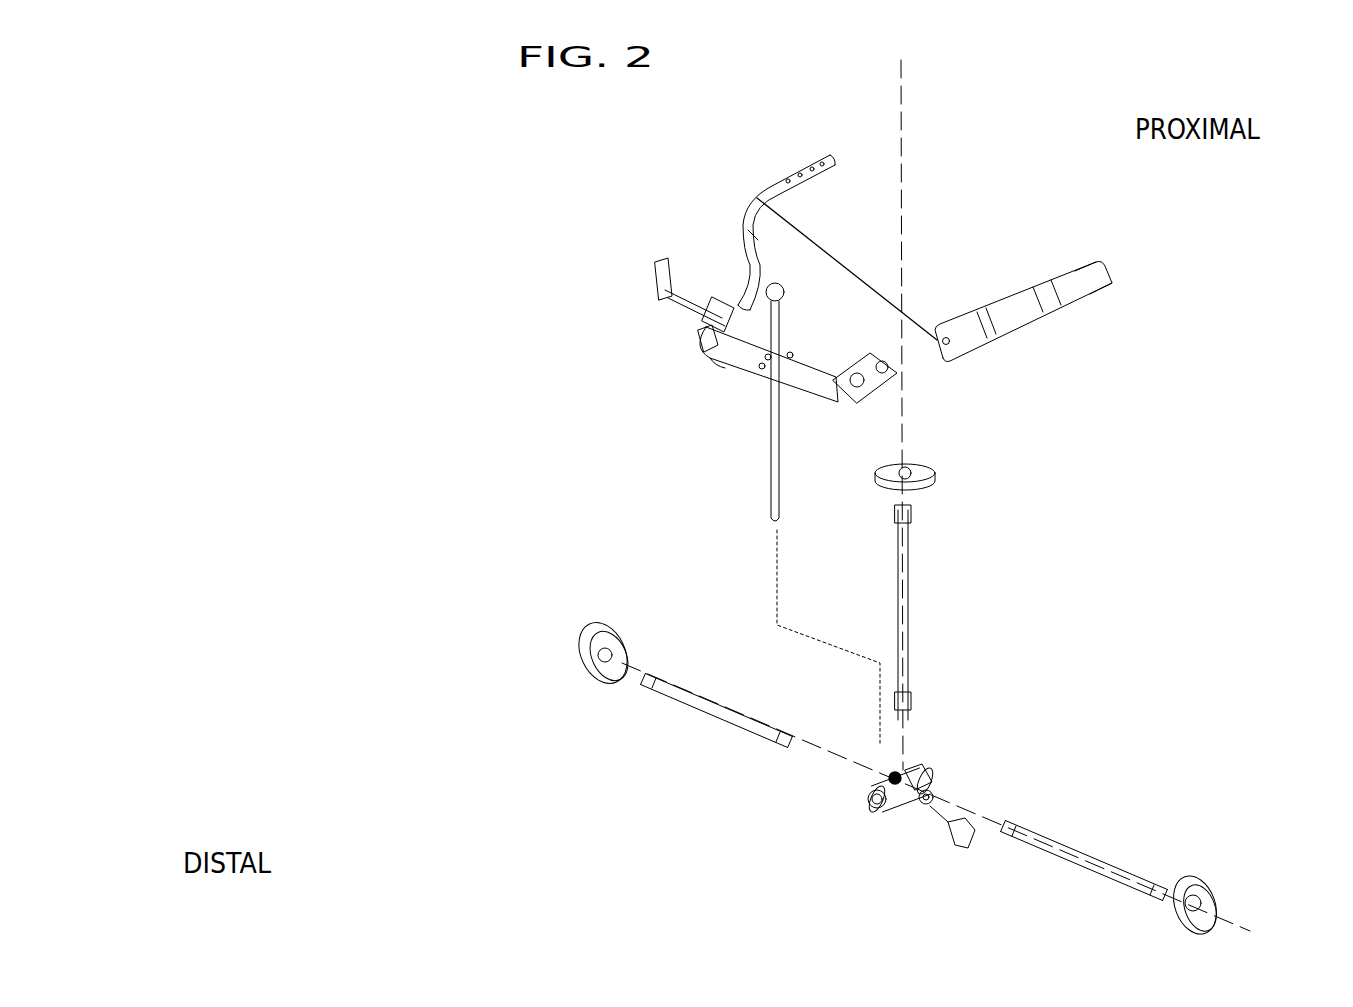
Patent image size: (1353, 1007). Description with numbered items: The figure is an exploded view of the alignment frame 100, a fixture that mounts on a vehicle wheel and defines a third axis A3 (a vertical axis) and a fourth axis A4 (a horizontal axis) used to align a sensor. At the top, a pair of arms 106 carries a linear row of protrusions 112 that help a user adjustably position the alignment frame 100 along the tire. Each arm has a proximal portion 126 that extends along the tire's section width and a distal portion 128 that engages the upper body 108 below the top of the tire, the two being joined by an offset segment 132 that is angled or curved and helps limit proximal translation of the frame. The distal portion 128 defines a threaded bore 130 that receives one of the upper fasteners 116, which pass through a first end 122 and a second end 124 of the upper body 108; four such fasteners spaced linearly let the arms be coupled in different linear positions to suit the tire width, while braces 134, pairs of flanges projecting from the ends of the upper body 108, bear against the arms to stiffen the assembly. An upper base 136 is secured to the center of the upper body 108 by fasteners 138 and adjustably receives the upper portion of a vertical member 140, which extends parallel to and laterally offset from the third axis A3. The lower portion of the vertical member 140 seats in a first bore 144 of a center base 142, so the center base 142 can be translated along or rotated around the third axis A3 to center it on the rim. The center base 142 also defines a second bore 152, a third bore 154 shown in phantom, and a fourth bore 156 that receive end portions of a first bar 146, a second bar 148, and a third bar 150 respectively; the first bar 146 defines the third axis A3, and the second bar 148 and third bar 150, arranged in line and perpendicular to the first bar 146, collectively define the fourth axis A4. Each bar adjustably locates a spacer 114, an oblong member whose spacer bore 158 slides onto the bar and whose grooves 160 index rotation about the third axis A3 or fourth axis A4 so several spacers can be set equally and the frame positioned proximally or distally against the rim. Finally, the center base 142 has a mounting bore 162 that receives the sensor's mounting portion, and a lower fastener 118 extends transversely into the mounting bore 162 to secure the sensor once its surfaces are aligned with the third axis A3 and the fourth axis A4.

The alignment frame 100 is at (1020, 180).
The pair of arms 106 is at (775, 254).
The upper body 108 is at (728, 364).
The protrusions 112 is at (815, 175).
The spacers 114 is at (1163, 925).
The upper fasteners 116 is at (886, 418).
The lower fastener 118 is at (963, 825).
The first end 122 is at (720, 323).
The second end 124 is at (1005, 447).
The proximal portion 126 is at (1085, 293).
The distal portion 128 is at (965, 332).
The bore 130 is at (935, 340).
The offset segment 132 is at (1003, 300).
The braces 134 is at (720, 305).
The upper base 136 is at (888, 420).
The fasteners 138 is at (760, 367).
The vertical member 140 is at (777, 433).
The center base 142 is at (945, 762).
The first bore 144 is at (865, 787).
The first bar 146 is at (905, 608).
The second bar 148 is at (723, 708).
The third bar 150 is at (1060, 838).
The second bore 152 is at (900, 760).
The third bore 154 is at (920, 778).
The fourth bore 156 is at (928, 792).
The spacer bore 158 is at (1180, 908).
The grooves 160 is at (1192, 876).
The mounting bore 162 is at (862, 806).
The third axis A3 is at (903, 85).
The fourth axis A4 is at (1243, 931).